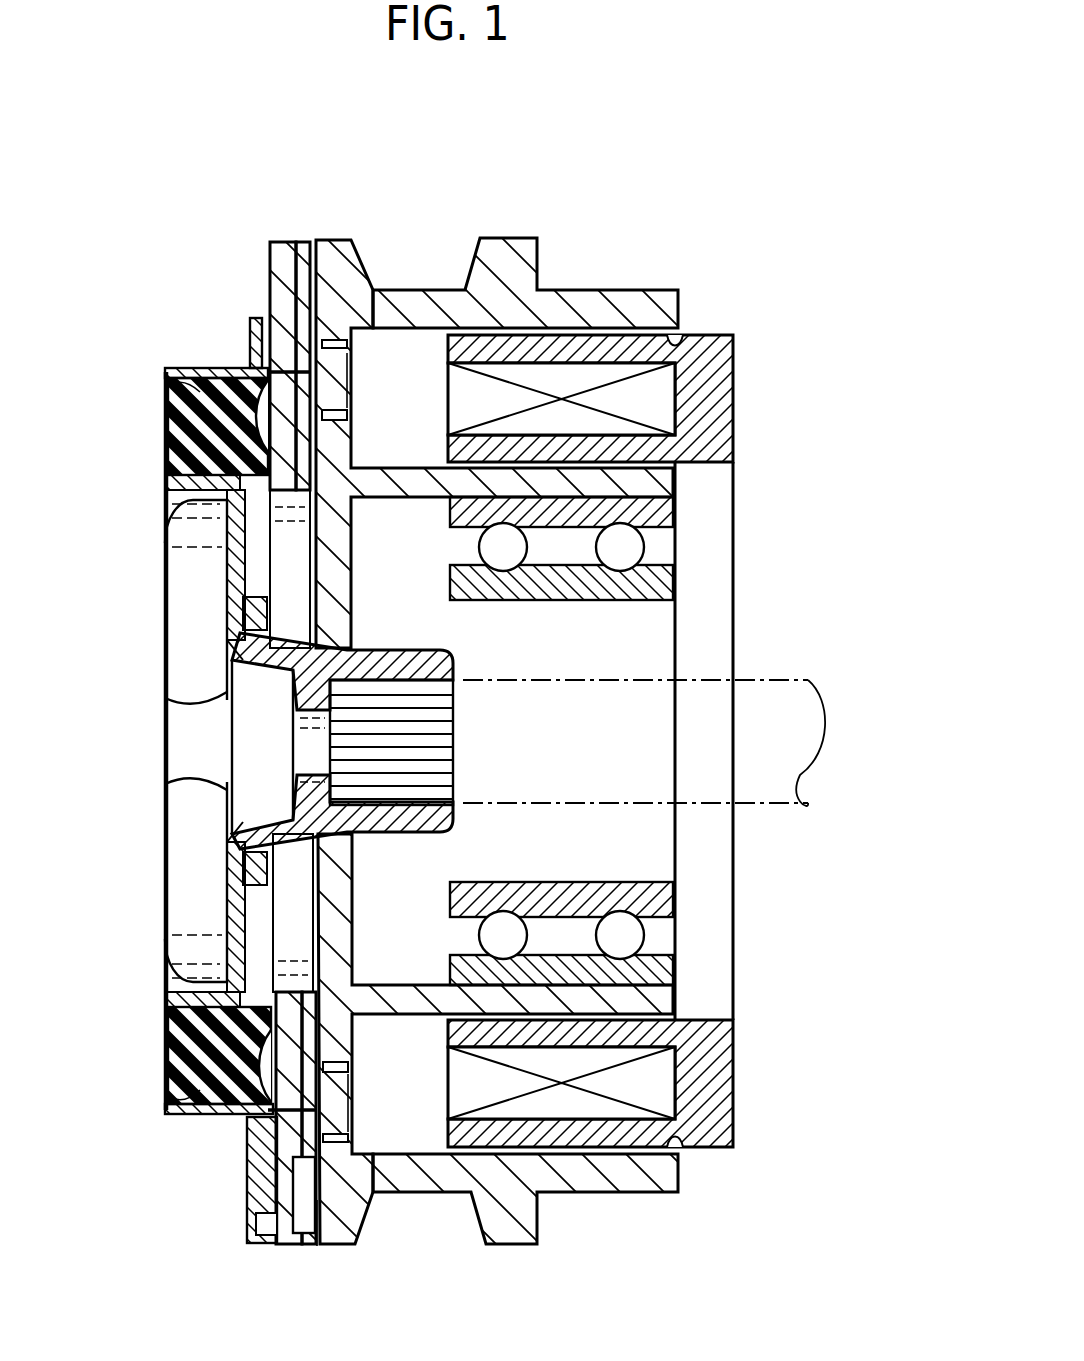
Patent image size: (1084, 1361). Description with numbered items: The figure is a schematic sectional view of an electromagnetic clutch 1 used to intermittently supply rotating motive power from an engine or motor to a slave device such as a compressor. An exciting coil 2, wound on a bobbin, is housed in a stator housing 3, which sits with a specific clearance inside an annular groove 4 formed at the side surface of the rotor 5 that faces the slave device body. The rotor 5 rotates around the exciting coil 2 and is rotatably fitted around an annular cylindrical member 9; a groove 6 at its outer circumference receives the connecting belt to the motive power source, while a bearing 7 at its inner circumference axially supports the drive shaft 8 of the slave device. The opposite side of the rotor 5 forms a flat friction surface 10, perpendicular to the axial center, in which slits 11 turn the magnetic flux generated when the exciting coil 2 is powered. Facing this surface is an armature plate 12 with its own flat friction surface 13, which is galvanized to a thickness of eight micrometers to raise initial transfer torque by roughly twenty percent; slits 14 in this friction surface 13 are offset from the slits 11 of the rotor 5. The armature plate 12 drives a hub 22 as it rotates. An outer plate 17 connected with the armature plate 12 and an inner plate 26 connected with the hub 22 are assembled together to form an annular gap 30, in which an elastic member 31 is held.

The electromagnetic clutch 1 is at (668, 245).
The exciting coil 2 is at (667, 403).
The stator housing 3 is at (717, 357).
The annular groove 4 is at (702, 333).
The rotor 5 is at (597, 290).
The groove 6 is at (372, 262).
The bearing 7 is at (660, 576).
The drive shaft 8 is at (583, 803).
The cylindrical member 9 is at (657, 647).
The friction surface 10 is at (300, 240).
The slits 11 is at (338, 348).
The armature plate 12 is at (283, 240).
The friction surface 13 is at (332, 1246).
The slits 14 is at (352, 392).
The outer plate 17 is at (205, 366).
The hub 22 is at (258, 687).
The inner plate 26 is at (170, 547).
The annular gap 30 is at (180, 387).
The elastic member 31 is at (180, 440).